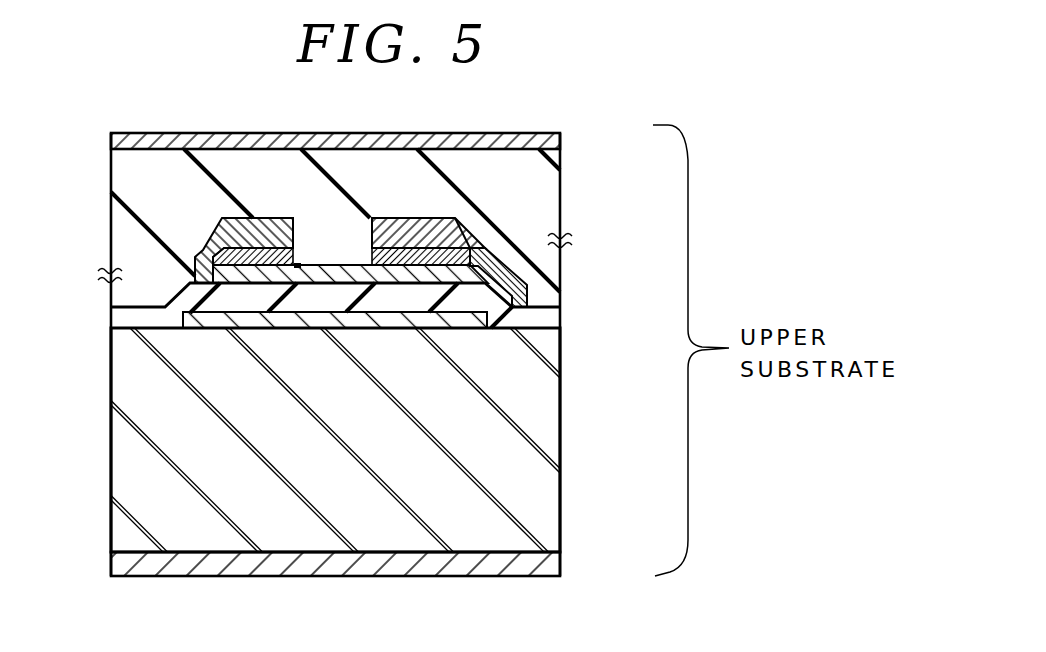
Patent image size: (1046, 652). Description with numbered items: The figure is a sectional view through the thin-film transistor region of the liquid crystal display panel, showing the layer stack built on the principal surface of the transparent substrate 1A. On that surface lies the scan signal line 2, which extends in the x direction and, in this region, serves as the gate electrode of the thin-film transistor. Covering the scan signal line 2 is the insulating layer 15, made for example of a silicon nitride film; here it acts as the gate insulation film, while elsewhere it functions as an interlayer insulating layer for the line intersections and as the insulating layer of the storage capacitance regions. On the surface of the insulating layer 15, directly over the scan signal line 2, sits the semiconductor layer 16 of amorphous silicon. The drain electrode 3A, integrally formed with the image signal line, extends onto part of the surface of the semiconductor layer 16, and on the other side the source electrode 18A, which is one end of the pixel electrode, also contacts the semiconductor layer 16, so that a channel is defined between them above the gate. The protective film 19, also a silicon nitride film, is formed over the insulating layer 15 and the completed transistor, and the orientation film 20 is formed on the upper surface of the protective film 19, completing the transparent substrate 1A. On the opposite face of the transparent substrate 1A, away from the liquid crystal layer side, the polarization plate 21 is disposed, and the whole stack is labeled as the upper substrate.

The transparent substrate 1A is at (553, 413).
The scan signal line 2 is at (340, 326).
The drain electrode 3A is at (215, 232).
The insulating layer 15 is at (560, 322).
The semiconductor layer 16 is at (342, 265).
The source electrode 18A is at (540, 262).
The protective film 19 is at (550, 197).
The orientation film 20 is at (560, 142).
The polarization plate 21 is at (553, 570).